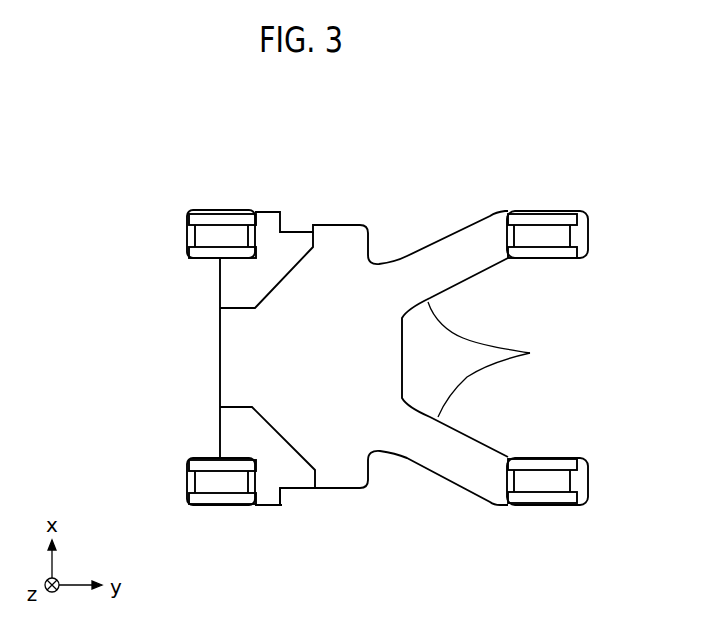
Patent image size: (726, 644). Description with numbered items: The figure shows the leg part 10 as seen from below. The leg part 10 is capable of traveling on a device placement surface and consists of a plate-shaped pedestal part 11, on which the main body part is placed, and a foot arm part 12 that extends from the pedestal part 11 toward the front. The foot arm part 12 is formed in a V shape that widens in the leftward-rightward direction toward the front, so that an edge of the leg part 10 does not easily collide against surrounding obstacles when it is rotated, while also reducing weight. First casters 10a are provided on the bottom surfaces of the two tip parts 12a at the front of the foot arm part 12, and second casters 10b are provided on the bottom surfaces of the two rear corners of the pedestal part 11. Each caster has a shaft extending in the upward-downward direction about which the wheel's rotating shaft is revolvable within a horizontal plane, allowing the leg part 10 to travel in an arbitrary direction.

The leg part 10 is at (401, 187).
The first caster 10a is at (542, 228).
The second caster 10b is at (219, 228).
The pedestal part 11 is at (290, 489).
The foot arm part 12 is at (531, 353).
The tip part 12a is at (566, 213).